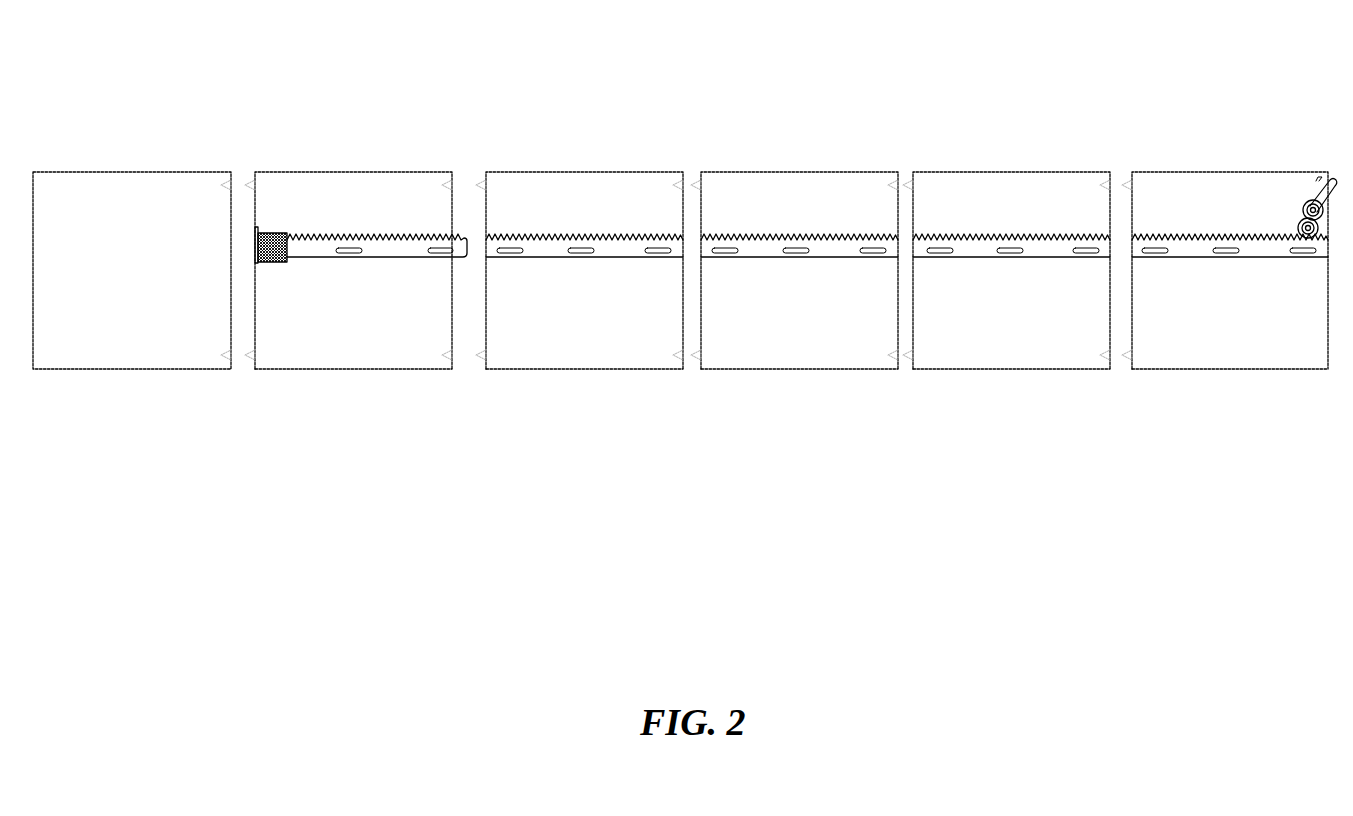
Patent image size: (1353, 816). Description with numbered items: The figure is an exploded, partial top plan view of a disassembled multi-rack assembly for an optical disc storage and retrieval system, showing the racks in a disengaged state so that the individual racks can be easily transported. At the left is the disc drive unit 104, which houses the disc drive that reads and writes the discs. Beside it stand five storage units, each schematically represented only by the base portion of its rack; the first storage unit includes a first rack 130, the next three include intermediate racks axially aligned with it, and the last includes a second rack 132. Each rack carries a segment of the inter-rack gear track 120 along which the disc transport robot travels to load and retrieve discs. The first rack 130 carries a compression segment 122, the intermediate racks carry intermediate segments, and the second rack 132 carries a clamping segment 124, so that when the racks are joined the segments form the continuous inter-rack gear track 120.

The disc drive unit 104 is at (117, 399).
The inter-rack gear track 120 is at (796, 136).
The compression segment 122 is at (387, 226).
The clamping segment 124 is at (1192, 226).
The first rack 130 is at (308, 362).
The second rack 132 is at (1245, 372).